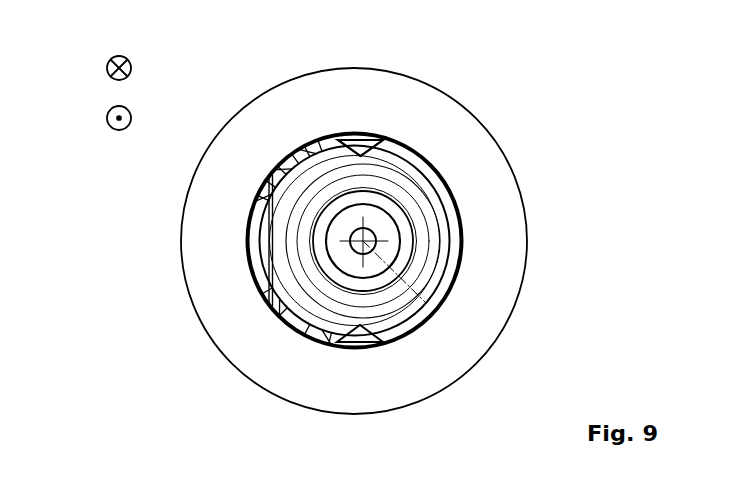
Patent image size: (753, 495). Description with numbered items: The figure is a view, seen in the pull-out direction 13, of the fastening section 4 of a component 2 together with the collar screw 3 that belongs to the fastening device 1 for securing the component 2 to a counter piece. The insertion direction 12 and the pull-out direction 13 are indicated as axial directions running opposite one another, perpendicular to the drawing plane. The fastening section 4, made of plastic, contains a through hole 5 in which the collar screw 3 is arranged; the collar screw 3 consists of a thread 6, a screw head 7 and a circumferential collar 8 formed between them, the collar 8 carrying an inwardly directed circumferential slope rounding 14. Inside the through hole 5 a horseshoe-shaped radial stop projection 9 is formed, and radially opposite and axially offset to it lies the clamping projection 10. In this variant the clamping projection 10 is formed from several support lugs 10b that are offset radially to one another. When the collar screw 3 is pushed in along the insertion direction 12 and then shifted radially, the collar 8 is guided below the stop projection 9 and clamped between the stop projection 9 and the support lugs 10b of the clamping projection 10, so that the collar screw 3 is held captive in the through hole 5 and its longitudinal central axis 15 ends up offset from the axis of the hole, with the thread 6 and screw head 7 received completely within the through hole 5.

The fastening device 1 is at (565, 152).
The component 2 is at (527, 206).
The collar screw 3 is at (445, 194).
The fastening section 4 is at (455, 353).
The through hole 5 is at (296, 153).
The thread 6 is at (330, 285).
The screw head 7 is at (280, 168).
The collar 8 is at (425, 238).
The stop projection 9 is at (417, 160).
The clamping projection 10 is at (262, 241).
The support lugs 10b is at (360, 150).
The insertion direction 12 is at (107, 118).
The pull-out direction 13 is at (107, 68).
The slope rounding 14 is at (438, 275).
The longitudinal central axis of the collar screw 15 is at (437, 312).